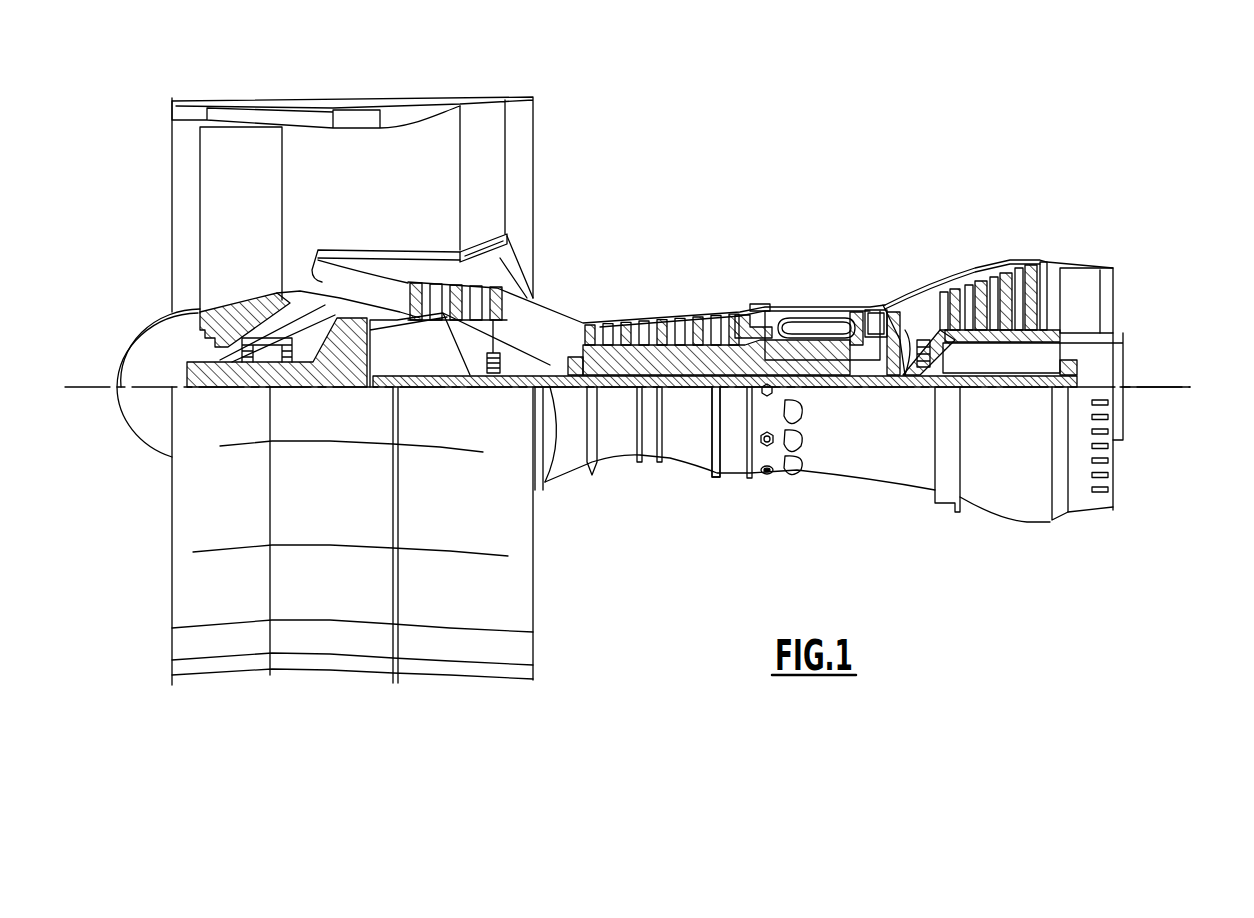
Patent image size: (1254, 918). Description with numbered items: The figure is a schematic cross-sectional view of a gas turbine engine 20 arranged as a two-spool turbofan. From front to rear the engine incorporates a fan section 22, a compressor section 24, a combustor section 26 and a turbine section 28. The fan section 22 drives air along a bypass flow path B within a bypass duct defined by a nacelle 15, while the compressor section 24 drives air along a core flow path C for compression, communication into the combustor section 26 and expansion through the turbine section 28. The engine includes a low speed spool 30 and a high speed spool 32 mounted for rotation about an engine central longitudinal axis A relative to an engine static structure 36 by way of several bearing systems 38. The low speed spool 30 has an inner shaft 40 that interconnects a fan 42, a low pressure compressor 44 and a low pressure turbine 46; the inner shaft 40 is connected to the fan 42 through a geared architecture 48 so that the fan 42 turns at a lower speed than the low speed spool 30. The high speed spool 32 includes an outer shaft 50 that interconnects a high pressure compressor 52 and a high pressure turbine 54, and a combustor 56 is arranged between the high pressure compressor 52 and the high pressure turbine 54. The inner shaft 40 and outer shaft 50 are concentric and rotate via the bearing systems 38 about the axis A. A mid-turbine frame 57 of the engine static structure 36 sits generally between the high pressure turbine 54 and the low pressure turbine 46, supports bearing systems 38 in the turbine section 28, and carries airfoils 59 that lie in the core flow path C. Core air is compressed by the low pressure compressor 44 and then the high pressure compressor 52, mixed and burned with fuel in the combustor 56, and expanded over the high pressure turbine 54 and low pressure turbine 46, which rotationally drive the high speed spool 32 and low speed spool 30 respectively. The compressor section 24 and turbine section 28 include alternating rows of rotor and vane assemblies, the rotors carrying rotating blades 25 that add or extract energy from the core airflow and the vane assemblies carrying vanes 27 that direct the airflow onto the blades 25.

The gas turbine engine 20 is at (818, 150).
The fan section 22 is at (280, 85).
The nacelle 15 is at (355, 105).
The fan 42 is at (256, 232).
The compressor section 24 is at (685, 284).
The blades 25 is at (417, 283).
The vanes 27 is at (435, 287).
The low pressure compressor 44 is at (462, 292).
The high pressure compressor 52 is at (663, 330).
The combustor section 26 is at (824, 299).
The combustor 56 is at (808, 325).
The high speed spool 32 is at (735, 320).
The high pressure turbine 54 is at (870, 305).
The turbine section 28 is at (1003, 311).
The mid-turbine frame 57 is at (920, 290).
The low pressure turbine 46 is at (1003, 262).
The airfoils 59 is at (945, 357).
The bearing systems 38 is at (493, 378).
The geared architecture 48 is at (362, 368).
The inner shaft 40 is at (552, 395).
The low speed spool 30 is at (693, 400).
The engine static structure 36 is at (732, 490).
The outer shaft 50 is at (808, 392).
The engine central longitudinal axis A is at (1207, 387).
The bypass flow path B is at (306, 178).
The core flow path C is at (345, 282).